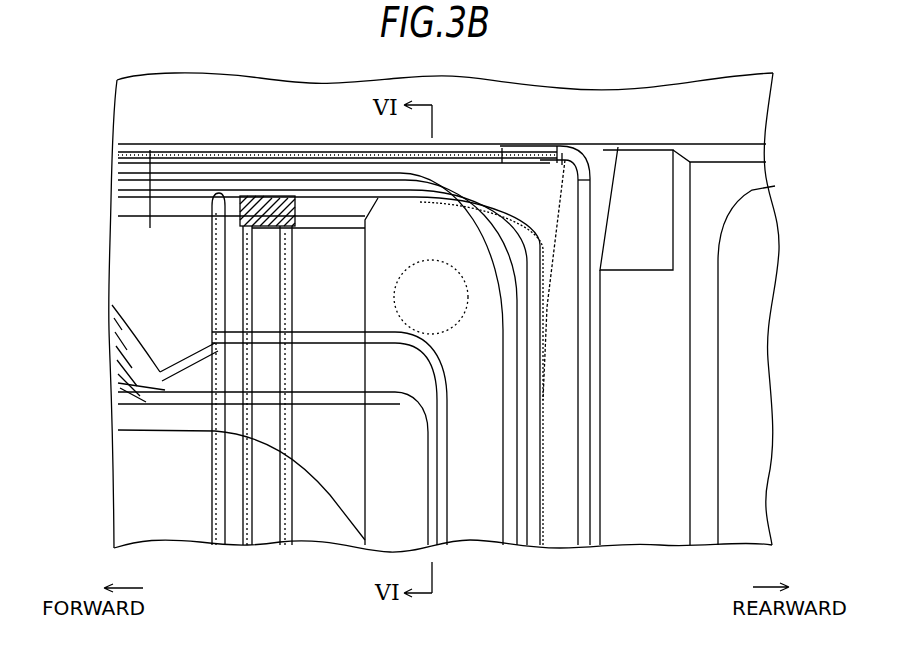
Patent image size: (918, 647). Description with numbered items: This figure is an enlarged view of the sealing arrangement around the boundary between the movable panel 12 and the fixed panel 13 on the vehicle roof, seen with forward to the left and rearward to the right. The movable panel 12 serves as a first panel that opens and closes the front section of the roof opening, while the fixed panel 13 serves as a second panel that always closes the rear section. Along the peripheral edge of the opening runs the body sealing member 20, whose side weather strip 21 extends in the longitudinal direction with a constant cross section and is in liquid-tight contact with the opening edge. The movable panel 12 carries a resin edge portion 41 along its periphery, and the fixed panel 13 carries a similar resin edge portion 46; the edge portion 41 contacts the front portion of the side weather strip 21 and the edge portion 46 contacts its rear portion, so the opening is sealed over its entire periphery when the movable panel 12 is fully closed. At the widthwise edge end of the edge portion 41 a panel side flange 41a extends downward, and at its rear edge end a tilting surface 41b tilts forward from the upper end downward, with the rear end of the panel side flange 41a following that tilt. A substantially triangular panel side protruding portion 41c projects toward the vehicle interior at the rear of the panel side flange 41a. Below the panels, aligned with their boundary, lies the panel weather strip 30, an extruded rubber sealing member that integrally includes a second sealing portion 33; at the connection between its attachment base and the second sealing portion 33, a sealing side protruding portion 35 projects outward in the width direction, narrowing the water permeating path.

The movable panel 12 is at (166, 524).
The fixed panel 13 is at (737, 542).
The body sealing member 20 is at (444, 312).
The side weather strip 21 is at (568, 92).
The panel weather strip 30 is at (658, 142).
The second sealing portion 33 is at (300, 512).
The sealing side protruding portion 35 is at (203, 198).
The edge portion 41 is at (241, 202).
The panel side flange 41a is at (167, 143).
The tilting surface 41b is at (600, 402).
The panel side protruding portion 41c is at (416, 213).
The edge portion 46 is at (745, 180).